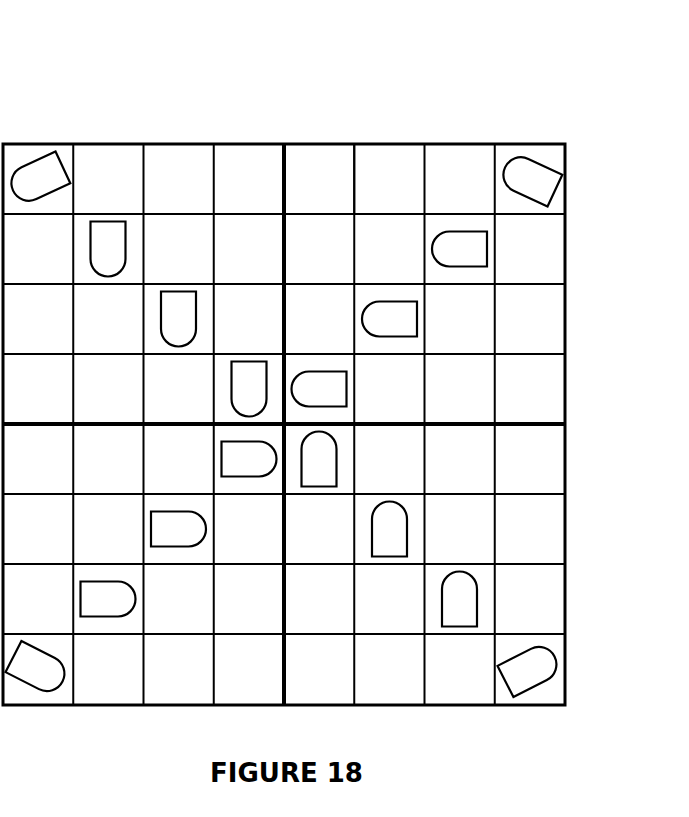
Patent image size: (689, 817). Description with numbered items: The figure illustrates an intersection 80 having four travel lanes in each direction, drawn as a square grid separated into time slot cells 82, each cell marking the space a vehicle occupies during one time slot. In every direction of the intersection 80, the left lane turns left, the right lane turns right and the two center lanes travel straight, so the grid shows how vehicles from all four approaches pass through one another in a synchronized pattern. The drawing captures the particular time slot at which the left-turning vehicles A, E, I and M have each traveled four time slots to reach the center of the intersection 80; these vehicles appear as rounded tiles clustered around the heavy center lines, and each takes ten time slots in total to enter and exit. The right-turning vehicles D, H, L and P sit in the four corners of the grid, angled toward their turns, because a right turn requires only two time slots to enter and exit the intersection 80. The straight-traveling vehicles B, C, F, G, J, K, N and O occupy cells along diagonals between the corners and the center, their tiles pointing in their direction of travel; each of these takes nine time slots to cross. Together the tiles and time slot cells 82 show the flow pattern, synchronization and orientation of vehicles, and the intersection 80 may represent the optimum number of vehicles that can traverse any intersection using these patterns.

The intersection 80 is at (204, 70).
The time slot cell 82 is at (320, 163).
The vehicle P is at (38, 179).
The vehicle L is at (530, 179).
The vehicle O is at (108, 249).
The vehicle K is at (459, 249).
The vehicle N is at (178, 319).
The vehicle J is at (389, 319).
The vehicle M is at (249, 389).
The vehicle I is at (319, 389).
The vehicle A is at (249, 459).
The vehicle E is at (319, 459).
The vehicle B is at (178, 529).
The vehicle F is at (389, 529).
The vehicle C is at (108, 599).
The vehicle G is at (459, 599).
The vehicle D is at (38, 669).
The vehicle H is at (530, 669).